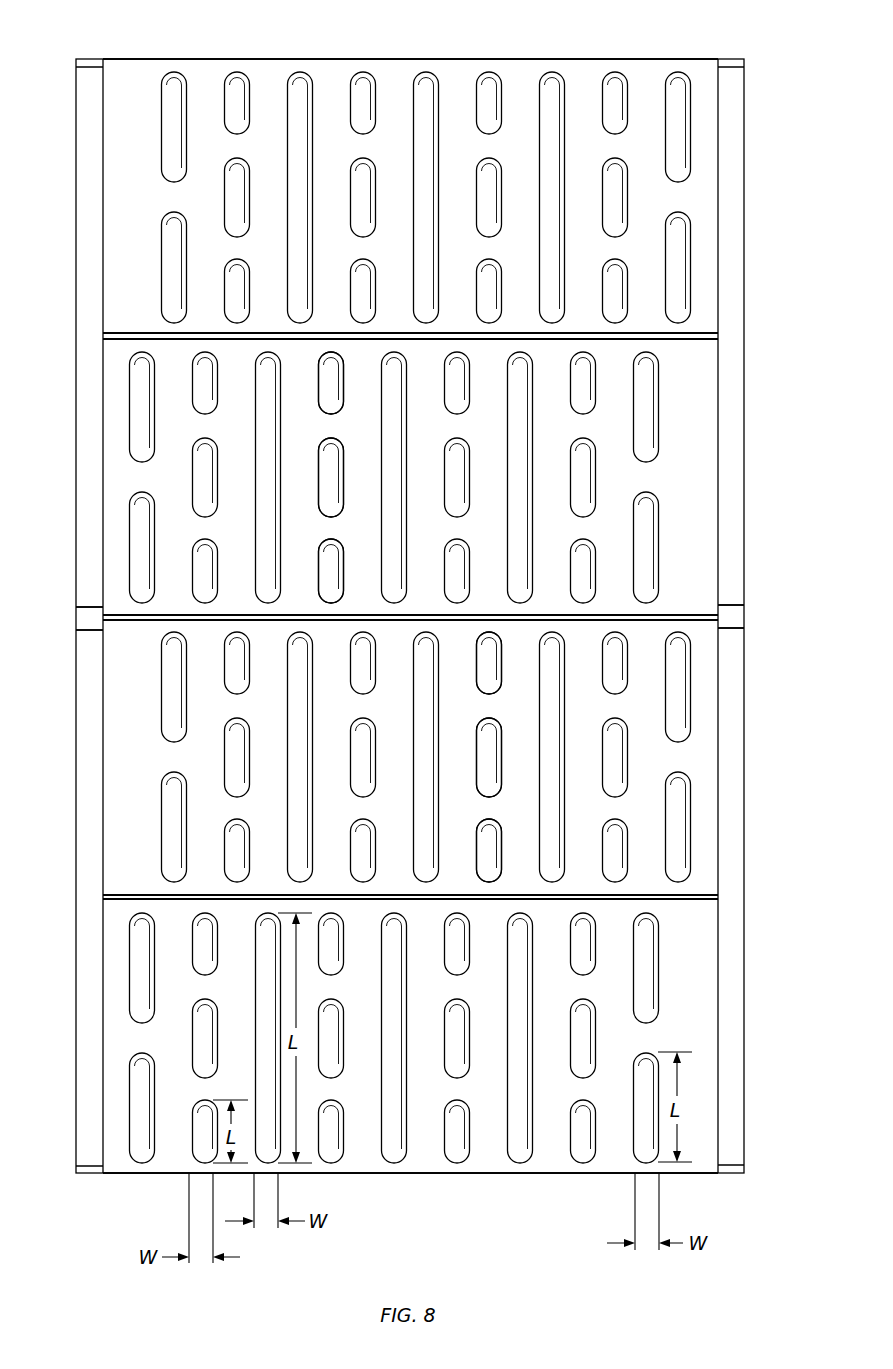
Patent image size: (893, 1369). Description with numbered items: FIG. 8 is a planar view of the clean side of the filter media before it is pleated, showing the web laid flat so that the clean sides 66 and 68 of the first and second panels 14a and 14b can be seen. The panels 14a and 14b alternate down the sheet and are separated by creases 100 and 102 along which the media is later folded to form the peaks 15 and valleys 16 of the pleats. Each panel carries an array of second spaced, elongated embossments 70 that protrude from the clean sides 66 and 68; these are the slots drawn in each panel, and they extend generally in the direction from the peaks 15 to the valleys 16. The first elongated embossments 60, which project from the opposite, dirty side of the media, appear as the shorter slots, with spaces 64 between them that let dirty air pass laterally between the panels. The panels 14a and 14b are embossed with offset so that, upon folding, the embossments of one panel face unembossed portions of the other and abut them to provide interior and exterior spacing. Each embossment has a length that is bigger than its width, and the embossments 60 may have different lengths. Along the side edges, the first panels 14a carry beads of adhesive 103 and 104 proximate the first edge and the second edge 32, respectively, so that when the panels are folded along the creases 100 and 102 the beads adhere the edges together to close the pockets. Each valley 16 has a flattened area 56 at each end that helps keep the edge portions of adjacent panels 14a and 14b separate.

The first panel 14a is at (681, 598).
The second panel 14b is at (121, 303).
The peak 15 is at (705, 340).
The valley 16 is at (105, 613).
The second edge 32 is at (745, 483).
The flattened valley floor 56 is at (82, 620).
The first elongated embossments 60 is at (224, 287).
The spaces between first embossments 64 is at (327, 527).
The clean side of first panel 66 is at (700, 528).
The clean side of second panel 68 is at (702, 282).
The second elongated embossments 70 is at (161, 267).
The crease 100 is at (115, 333).
The crease 102 is at (123, 622).
The bead of adhesive 103 is at (85, 762).
The bead of adhesive 104 is at (733, 428).